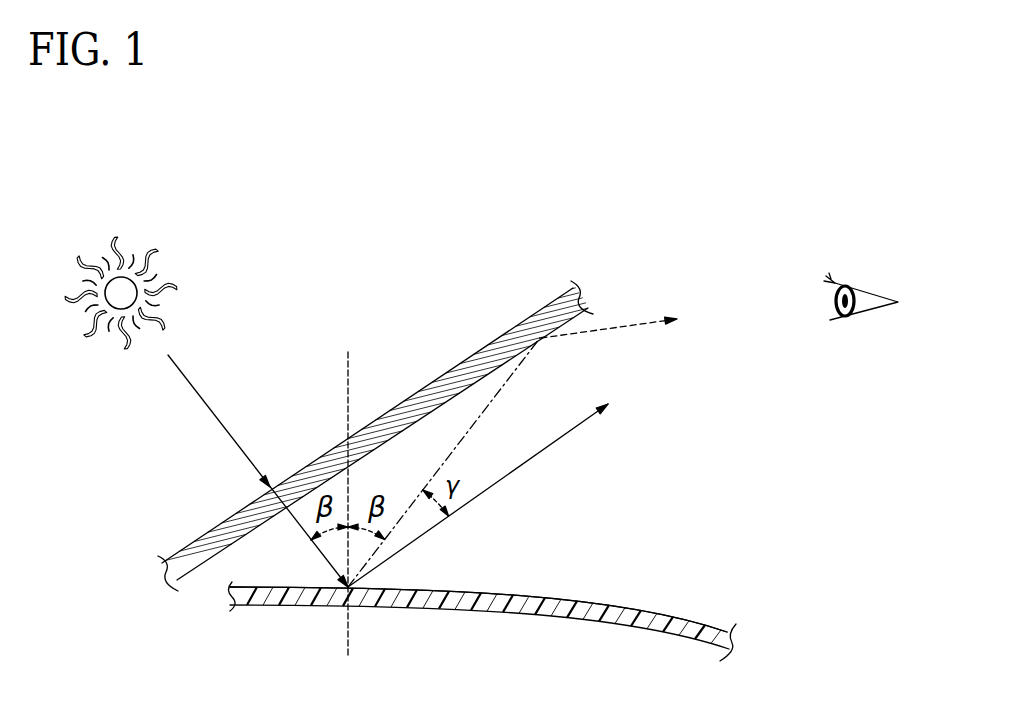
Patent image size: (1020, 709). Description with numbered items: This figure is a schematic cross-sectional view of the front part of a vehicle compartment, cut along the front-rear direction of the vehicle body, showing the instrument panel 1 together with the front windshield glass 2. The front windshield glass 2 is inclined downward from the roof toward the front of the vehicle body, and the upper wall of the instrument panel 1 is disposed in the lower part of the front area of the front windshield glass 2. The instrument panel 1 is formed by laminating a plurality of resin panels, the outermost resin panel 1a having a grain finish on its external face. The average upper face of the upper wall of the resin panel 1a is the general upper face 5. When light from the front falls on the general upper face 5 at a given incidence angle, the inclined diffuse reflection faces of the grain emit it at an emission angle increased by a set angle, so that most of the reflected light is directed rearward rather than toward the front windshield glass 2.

The instrument panel 1 is at (483, 584).
The resin panel 1a is at (567, 589).
The front windshield glass 2 is at (471, 357).
The general upper face 5 is at (460, 588).